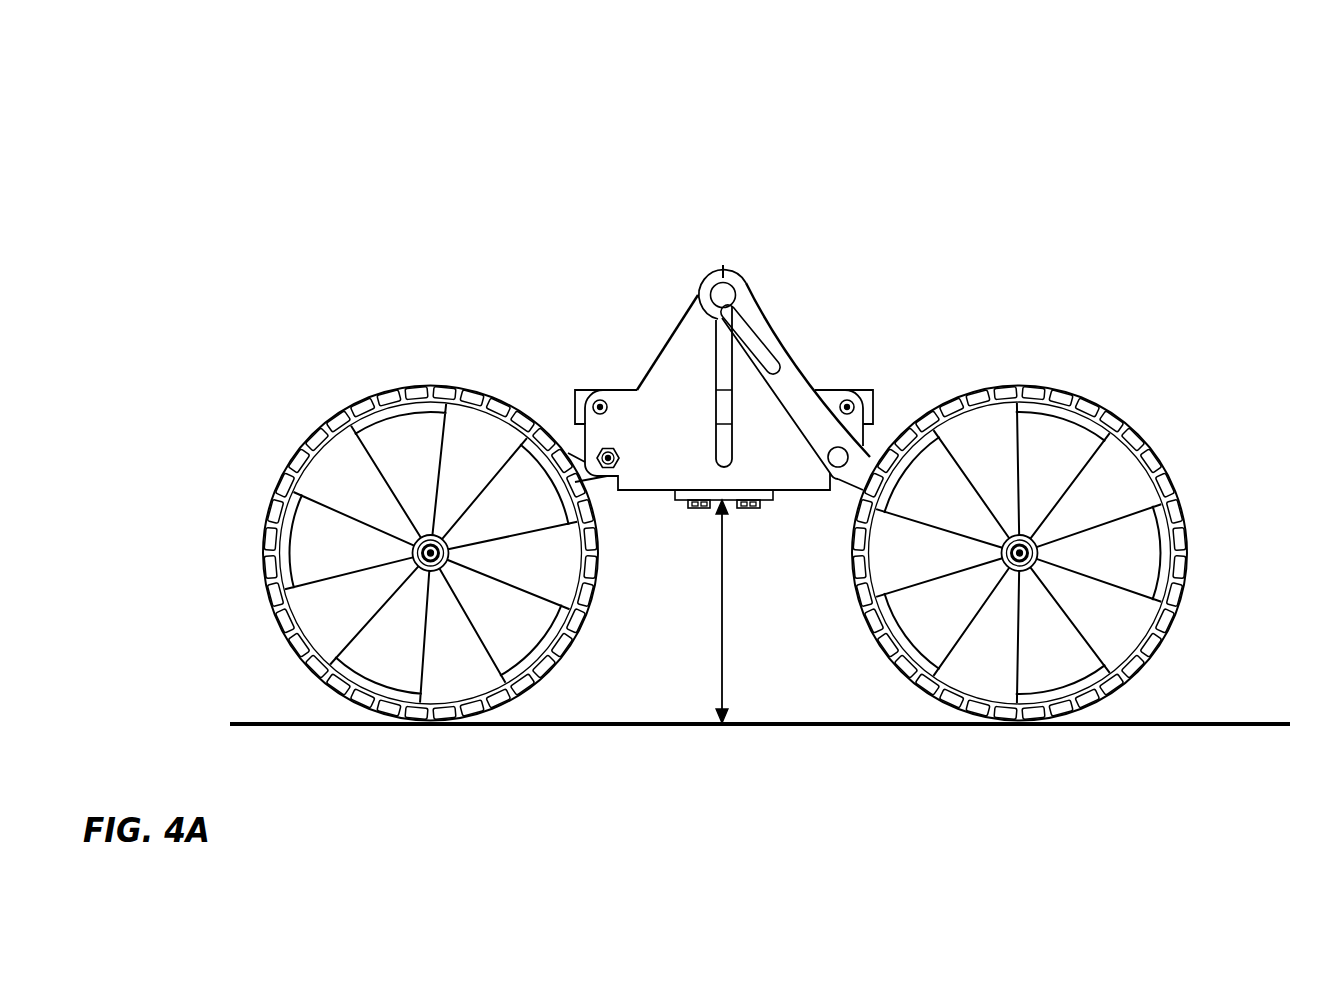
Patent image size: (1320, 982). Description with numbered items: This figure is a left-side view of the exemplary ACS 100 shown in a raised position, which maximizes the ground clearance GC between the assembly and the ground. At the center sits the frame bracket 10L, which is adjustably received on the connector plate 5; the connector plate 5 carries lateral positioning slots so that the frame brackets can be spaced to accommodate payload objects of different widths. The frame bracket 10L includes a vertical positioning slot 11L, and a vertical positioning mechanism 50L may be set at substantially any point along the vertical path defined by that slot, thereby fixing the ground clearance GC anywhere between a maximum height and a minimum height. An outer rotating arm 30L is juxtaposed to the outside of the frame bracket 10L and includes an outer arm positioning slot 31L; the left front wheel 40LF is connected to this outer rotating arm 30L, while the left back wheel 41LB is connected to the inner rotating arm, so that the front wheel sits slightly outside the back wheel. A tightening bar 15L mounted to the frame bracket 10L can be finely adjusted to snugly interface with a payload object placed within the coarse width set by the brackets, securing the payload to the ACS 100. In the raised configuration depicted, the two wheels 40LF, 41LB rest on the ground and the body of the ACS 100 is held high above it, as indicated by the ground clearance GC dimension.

The ACS 100 is at (1238, 108).
The left back wheel 41LB is at (405, 387).
The left front wheel 40LF is at (1060, 388).
The frame bracket 10L is at (722, 362).
The vertical positioning slot 11L is at (666, 381).
The vertical positioning mechanism 50L is at (727, 288).
The outer arm positioning slot 31L is at (753, 335).
The outer rotating arm 30L is at (797, 382).
The tightening bar 15L is at (880, 398).
The connector plate 5 is at (767, 502).
The ground clearance GC is at (713, 595).